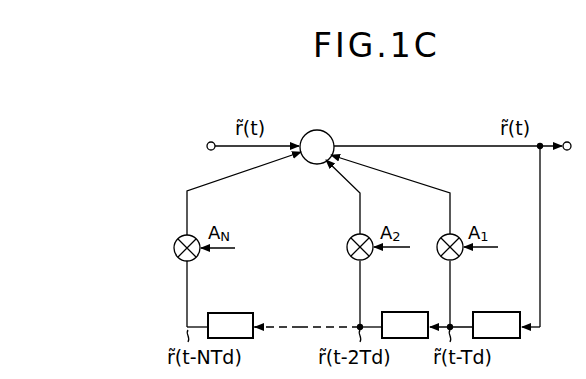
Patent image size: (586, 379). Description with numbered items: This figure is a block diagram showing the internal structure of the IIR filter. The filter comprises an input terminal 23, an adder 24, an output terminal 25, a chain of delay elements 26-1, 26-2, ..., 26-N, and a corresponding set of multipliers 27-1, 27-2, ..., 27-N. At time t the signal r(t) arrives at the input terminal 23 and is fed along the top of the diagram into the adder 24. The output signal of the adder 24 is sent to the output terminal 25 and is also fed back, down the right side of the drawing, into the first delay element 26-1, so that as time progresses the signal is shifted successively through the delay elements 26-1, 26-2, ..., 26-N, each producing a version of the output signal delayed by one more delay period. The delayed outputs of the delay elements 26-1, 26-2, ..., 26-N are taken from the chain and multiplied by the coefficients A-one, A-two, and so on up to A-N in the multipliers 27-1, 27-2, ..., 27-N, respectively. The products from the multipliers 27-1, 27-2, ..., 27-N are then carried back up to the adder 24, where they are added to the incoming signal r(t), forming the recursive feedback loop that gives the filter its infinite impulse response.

The input terminal 23 is at (210, 141).
The adder 24 is at (318, 129).
The output terminal 25 is at (564, 141).
The delay element 26-1 is at (477, 312).
The delay element 26-2 is at (389, 312).
The delay element 26-N is at (228, 313).
The multiplier 27-1 is at (458, 259).
The multiplier 27-2 is at (368, 259).
The multiplier 27-N is at (195, 261).